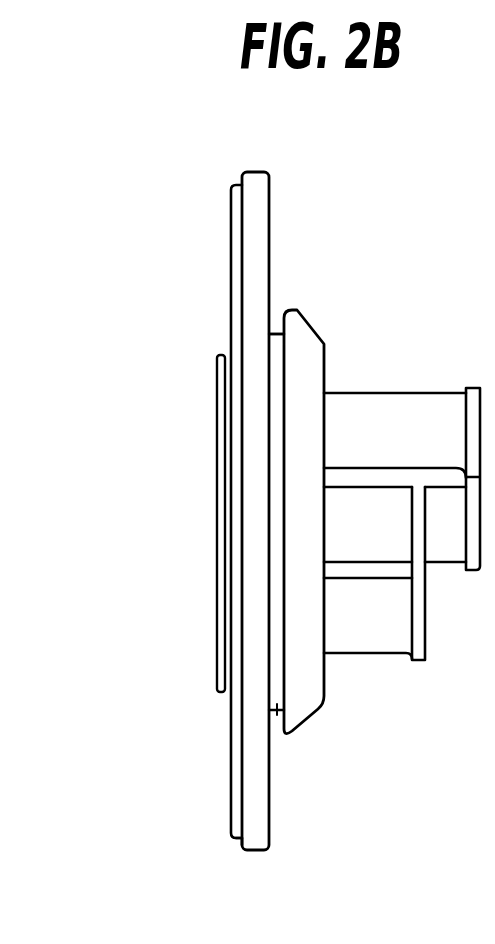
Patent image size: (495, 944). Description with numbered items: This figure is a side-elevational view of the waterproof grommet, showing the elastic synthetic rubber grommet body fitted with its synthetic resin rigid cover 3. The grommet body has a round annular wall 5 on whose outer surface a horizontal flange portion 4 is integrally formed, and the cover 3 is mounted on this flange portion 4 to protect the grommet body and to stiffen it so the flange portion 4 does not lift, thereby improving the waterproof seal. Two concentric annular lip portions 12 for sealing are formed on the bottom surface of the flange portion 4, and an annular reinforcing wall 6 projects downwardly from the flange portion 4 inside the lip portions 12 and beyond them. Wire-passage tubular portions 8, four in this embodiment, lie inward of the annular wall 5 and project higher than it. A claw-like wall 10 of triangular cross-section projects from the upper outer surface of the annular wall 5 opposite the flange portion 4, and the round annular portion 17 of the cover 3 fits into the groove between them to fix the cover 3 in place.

The cover 3 is at (270, 203).
The flange portion 4 is at (235, 843).
The annular wall 5 is at (277, 716).
The reinforcing wall 6 is at (220, 692).
The wire-passage tubular portion 8 is at (389, 393).
The claw-like wall 10 is at (307, 720).
The annular lip portion 12 is at (229, 790).
The annular portion 17 is at (276, 333).